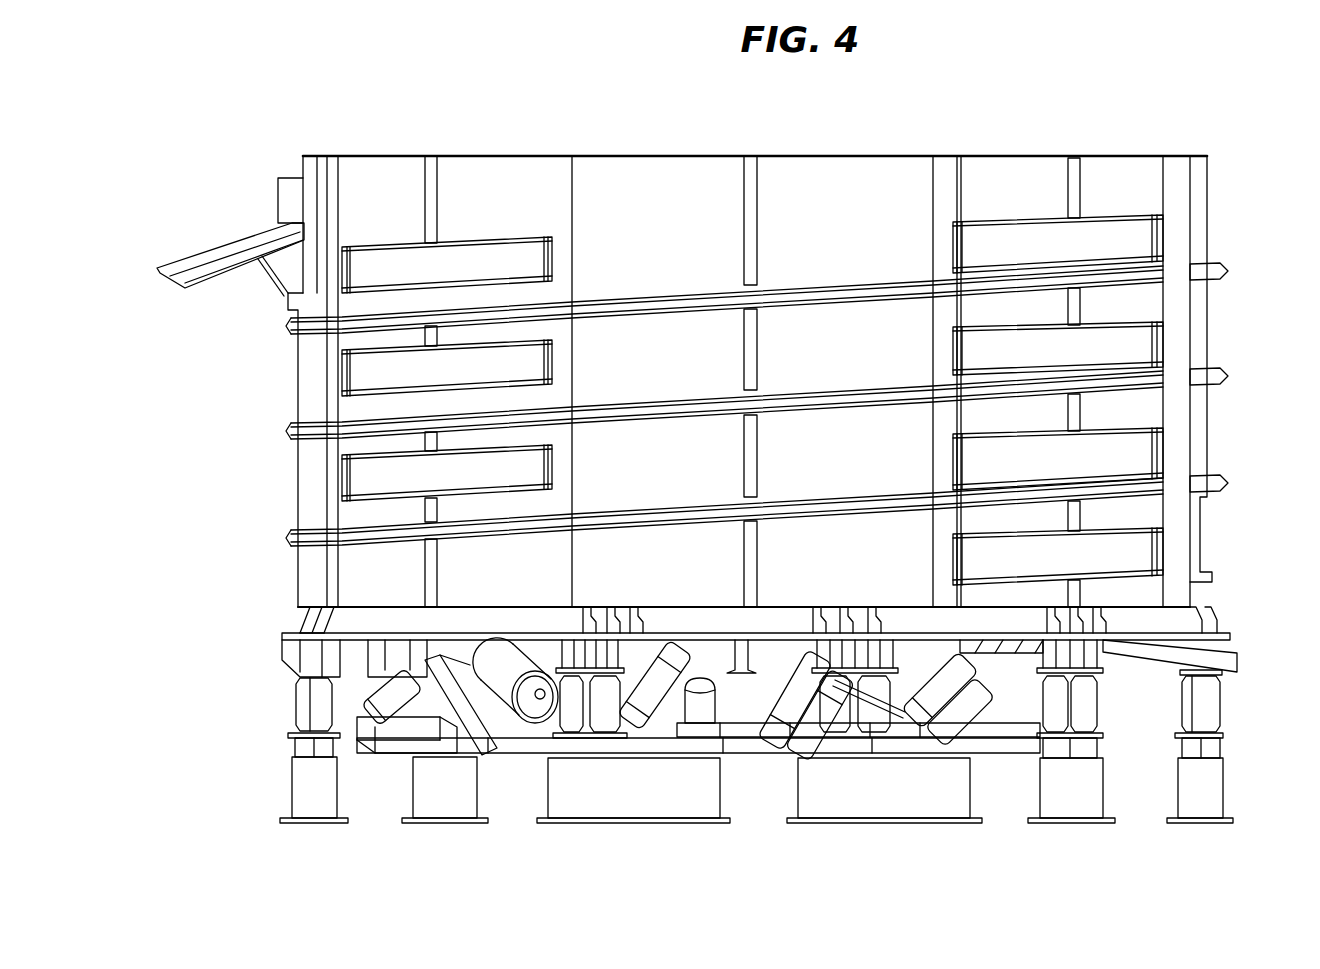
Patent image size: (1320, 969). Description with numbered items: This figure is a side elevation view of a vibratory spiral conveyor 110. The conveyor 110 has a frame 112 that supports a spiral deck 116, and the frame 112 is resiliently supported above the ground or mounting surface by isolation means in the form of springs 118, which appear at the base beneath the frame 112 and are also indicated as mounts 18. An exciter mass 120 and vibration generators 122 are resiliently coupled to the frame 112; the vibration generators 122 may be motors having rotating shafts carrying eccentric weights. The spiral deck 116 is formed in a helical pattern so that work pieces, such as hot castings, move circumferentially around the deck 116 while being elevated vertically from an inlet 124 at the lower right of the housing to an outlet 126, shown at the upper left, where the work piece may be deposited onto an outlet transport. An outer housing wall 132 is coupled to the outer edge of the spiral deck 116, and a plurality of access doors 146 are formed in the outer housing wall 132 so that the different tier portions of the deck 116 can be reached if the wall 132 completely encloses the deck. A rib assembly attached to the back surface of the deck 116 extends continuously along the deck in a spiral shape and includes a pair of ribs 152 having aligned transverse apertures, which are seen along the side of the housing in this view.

The spiral conveyor 110 is at (1006, 140).
The outer housing wall 132 is at (1127, 175).
The spiral deck 116 is at (387, 417).
The ribs 152 is at (362, 487).
The access doors 146 is at (1140, 348).
The inlet 124 is at (1222, 522).
The outlet 126 is at (217, 222).
The frame 112 is at (337, 618).
The springs 118 is at (308, 712).
The vibration isolator mounts 18 is at (1187, 706).
The exciter mass 120 is at (524, 770).
The vibration generators 122 is at (510, 695).